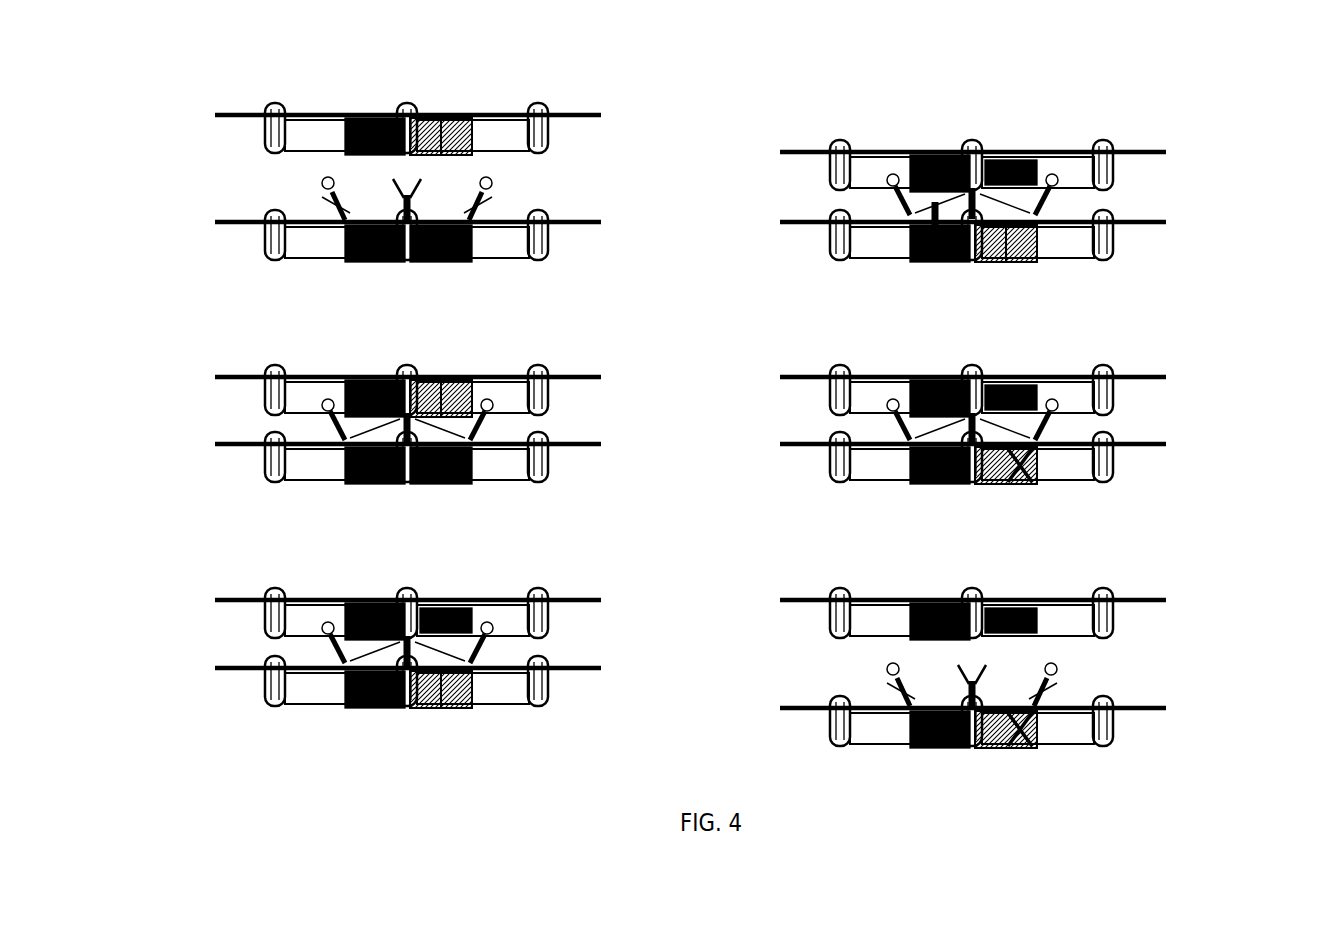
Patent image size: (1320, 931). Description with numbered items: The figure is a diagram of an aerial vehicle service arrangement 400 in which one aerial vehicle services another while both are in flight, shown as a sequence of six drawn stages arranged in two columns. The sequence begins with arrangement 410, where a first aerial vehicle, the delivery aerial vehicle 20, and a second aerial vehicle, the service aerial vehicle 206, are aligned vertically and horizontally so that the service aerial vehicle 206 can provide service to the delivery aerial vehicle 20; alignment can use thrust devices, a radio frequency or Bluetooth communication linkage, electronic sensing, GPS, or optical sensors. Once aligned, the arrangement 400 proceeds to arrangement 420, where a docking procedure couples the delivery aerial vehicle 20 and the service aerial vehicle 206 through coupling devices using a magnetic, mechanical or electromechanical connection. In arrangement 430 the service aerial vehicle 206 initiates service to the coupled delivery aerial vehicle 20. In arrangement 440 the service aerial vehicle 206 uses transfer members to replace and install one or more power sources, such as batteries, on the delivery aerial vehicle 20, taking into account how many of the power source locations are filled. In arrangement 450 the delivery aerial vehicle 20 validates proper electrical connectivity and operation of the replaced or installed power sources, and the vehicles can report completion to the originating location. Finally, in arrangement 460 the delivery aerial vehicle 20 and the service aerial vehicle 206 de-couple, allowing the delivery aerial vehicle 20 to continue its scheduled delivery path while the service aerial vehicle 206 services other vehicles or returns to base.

The aerial vehicle service arrangement 400 is at (1200, 72).
The arrangement 410 is at (193, 172).
The delivery aerial vehicle 20 is at (217, 115).
The service aerial vehicle 206 is at (217, 222).
The arrangement 420 is at (193, 422).
The arrangement 430 is at (193, 654).
The arrangement 440 is at (1212, 193).
The arrangement 450 is at (1212, 422).
The arrangement 460 is at (1212, 672).